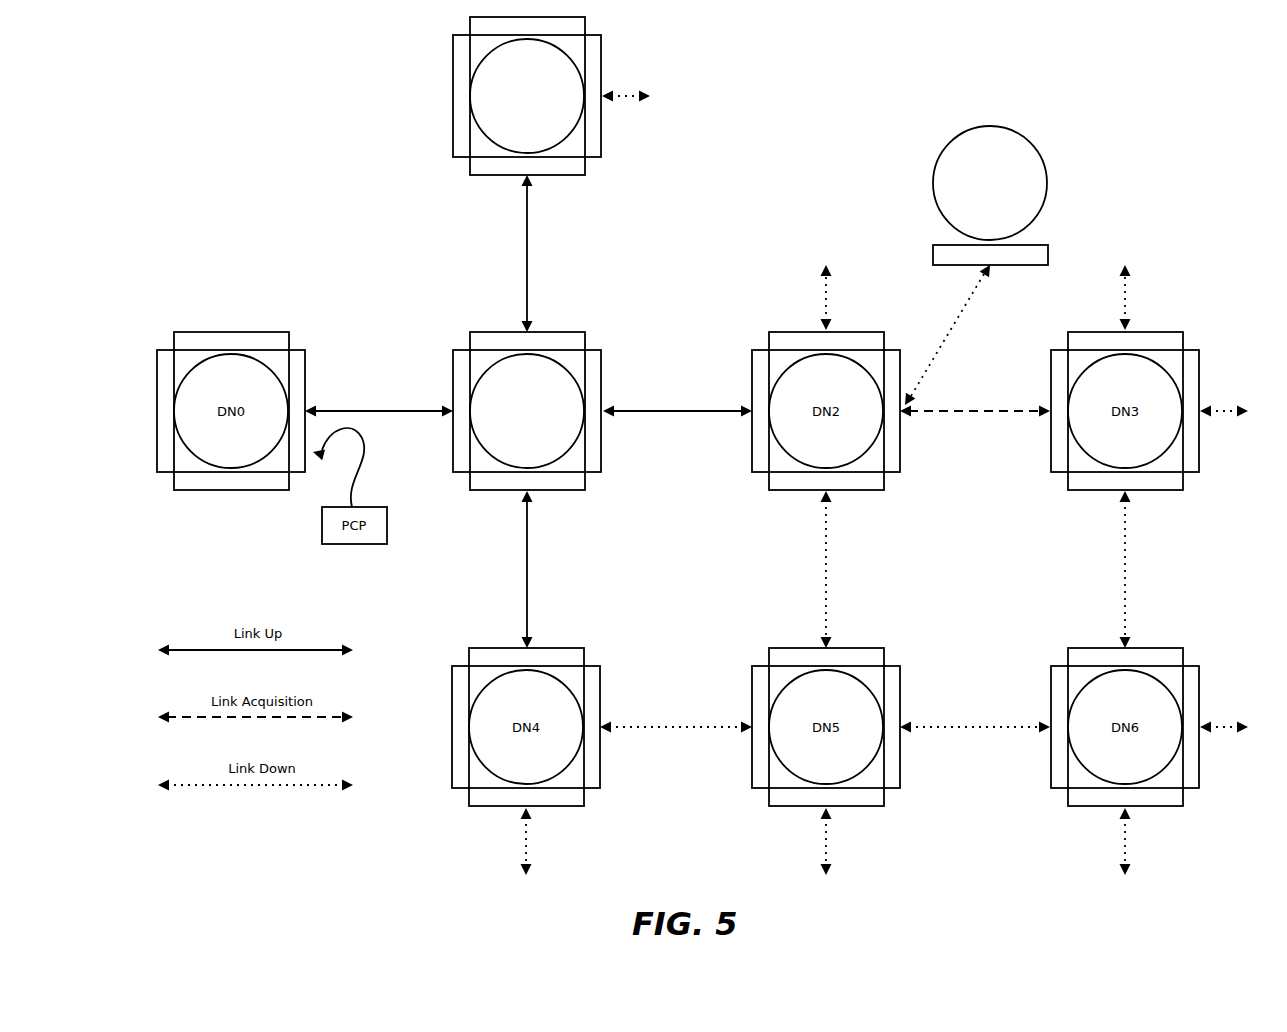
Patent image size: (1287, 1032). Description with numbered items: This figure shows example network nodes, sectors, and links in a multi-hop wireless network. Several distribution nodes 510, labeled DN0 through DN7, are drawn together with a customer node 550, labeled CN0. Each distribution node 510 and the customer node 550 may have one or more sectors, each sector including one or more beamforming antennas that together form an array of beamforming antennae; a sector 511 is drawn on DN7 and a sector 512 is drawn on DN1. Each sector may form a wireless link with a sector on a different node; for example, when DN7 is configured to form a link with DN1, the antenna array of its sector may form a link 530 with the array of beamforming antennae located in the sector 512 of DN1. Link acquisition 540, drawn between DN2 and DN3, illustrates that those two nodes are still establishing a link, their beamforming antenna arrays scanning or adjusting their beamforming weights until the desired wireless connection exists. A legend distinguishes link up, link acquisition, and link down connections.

The distribution node 510 is at (476, 106).
The first communication module of data node 511 is at (483, 176).
The sector 512 is at (470, 332).
The link up connection between DN7 and DN1 530 is at (526, 260).
The link acquisition 540 is at (978, 408).
The customer node 550 is at (952, 167).